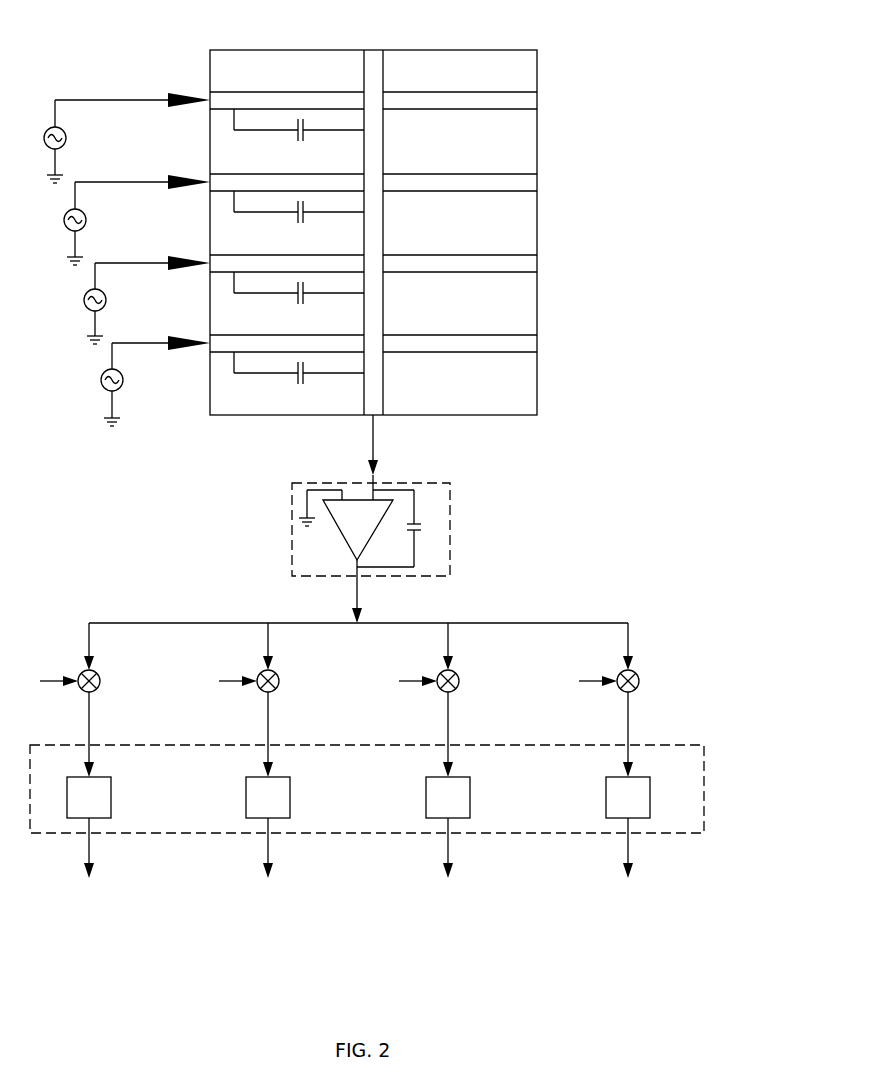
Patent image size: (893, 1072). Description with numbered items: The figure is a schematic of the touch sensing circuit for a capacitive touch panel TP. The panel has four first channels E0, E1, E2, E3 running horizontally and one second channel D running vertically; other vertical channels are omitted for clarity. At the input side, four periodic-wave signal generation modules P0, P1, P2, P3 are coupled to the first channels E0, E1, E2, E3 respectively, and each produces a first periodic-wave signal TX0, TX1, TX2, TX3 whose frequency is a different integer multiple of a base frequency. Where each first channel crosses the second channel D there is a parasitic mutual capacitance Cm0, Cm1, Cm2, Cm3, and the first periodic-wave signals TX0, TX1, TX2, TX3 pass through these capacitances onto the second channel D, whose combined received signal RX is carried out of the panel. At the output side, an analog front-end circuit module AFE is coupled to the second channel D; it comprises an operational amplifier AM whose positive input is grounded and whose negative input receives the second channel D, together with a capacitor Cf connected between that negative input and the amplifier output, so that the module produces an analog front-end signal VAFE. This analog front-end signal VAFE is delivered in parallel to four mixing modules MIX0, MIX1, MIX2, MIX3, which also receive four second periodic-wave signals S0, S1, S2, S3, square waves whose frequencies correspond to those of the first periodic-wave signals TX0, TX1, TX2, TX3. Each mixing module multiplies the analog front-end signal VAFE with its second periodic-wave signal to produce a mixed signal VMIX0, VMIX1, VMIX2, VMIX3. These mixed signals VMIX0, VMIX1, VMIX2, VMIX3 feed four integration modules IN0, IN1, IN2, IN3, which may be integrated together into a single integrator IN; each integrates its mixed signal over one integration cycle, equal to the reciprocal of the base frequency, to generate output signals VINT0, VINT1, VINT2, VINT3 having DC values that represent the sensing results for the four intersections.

The capacitive touch panel TP is at (497, 407).
The second channel D is at (372, 60).
The first channel E0 is at (527, 100).
The first channel E1 is at (527, 182).
The first channel E2 is at (527, 263).
The first channel E3 is at (527, 343).
The first periodic-wave signal TX0 is at (132, 90).
The first periodic-wave signal TX1 is at (142, 172).
The first periodic-wave signal TX2 is at (152, 253).
The first periodic-wave signal TX3 is at (161, 333).
The periodic-wave signal generation module P0 is at (43, 141).
The periodic-wave signal generation module P1 is at (63, 223).
The periodic-wave signal generation module P2 is at (83, 303).
The periodic-wave signal generation module P3 is at (100, 384).
The parasitic mutual capacitance Cm0 is at (299, 138).
The parasitic mutual capacitance Cm1 is at (299, 220).
The parasitic mutual capacitance Cm2 is at (299, 301).
The parasitic mutual capacitance Cm3 is at (299, 381).
The receive signal RX is at (387, 445).
The analog front-end circuit module AFE is at (452, 498).
The operational amplifier AM is at (372, 538).
The capacitor Cf is at (400, 528).
The analog front-end signal VAFE is at (382, 591).
The second periodic-wave signal S0 is at (47, 681).
The second periodic-wave signal S1 is at (226, 681).
The second periodic-wave signal S2 is at (406, 681).
The second periodic-wave signal S3 is at (586, 681).
The mixing module MIX0 is at (100, 681).
The mixing module MIX1 is at (279, 681).
The mixing module MIX2 is at (459, 681).
The mixing module MIX3 is at (639, 681).
The mixed signal VMIX0 is at (118, 734).
The mixed signal VMIX1 is at (297, 734).
The mixed signal VMIX2 is at (477, 734).
The mixed signal VMIX3 is at (657, 734).
The integrator IN is at (701, 826).
The integration module IN0 is at (105, 809).
The integration module IN1 is at (284, 809).
The integration module IN2 is at (464, 809).
The integration module IN3 is at (644, 809).
The output signal VINT0 is at (87, 863).
The output signal VINT1 is at (266, 863).
The output signal VINT2 is at (446, 863).
The output signal VINT3 is at (626, 863).